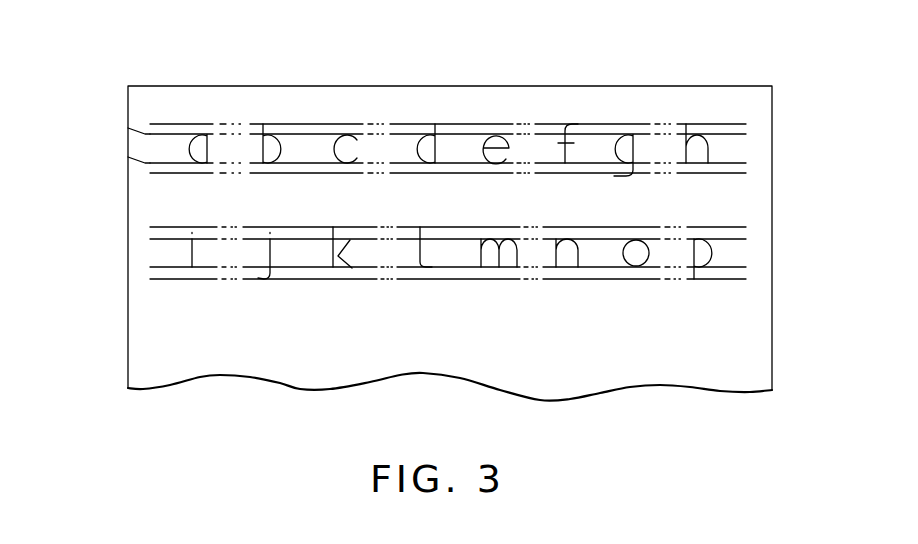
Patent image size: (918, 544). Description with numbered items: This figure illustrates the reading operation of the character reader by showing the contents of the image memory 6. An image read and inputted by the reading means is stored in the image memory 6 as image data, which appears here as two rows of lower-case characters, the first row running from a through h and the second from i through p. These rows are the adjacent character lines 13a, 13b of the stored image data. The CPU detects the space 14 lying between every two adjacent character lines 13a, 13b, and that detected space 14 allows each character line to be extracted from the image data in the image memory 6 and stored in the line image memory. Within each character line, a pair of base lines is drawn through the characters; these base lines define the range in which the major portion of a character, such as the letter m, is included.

The image memory 6 is at (724, 75).
The character line 13a is at (780, 126).
The character line 13b is at (780, 235).
The space 14 is at (780, 180).